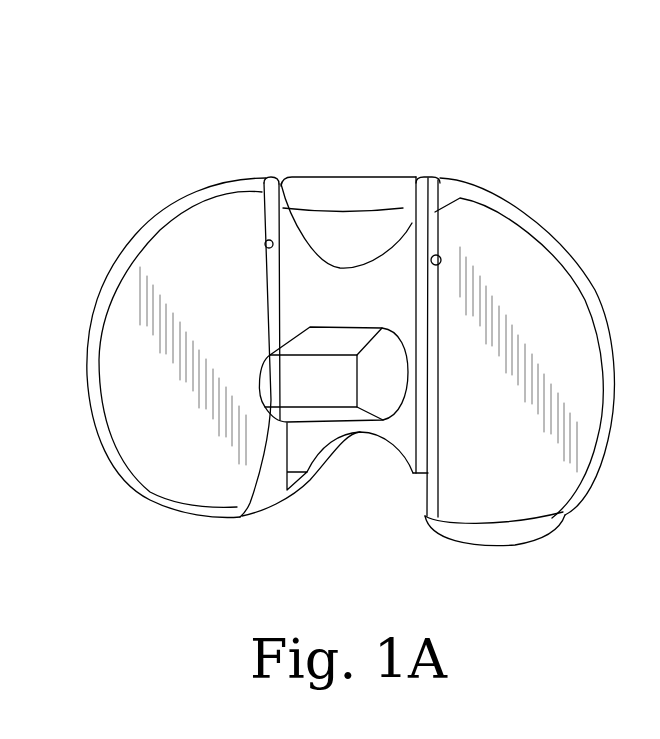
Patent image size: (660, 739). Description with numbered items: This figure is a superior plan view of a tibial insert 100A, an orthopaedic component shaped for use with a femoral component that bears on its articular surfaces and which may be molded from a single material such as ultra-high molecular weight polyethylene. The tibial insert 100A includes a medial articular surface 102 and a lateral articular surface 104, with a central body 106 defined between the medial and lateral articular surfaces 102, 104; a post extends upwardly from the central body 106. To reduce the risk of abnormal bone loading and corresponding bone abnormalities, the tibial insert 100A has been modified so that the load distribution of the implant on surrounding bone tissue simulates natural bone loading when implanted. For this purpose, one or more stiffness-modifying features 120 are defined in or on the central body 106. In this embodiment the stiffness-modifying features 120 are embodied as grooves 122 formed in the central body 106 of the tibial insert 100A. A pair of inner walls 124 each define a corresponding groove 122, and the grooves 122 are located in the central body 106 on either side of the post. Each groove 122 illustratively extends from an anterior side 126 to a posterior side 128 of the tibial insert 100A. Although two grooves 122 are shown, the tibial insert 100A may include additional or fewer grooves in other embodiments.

The tibial insert 100A is at (503, 144).
The medial articular surface 102 is at (172, 250).
The lateral articular surface 104 is at (540, 302).
The central body 106 is at (347, 273).
The stiffness-modifying features 120 is at (353, 347).
The grooves 122 is at (267, 272).
The inner walls 124 is at (266, 243).
The anterior side 126 is at (347, 140).
The posterior side 128 is at (366, 525).